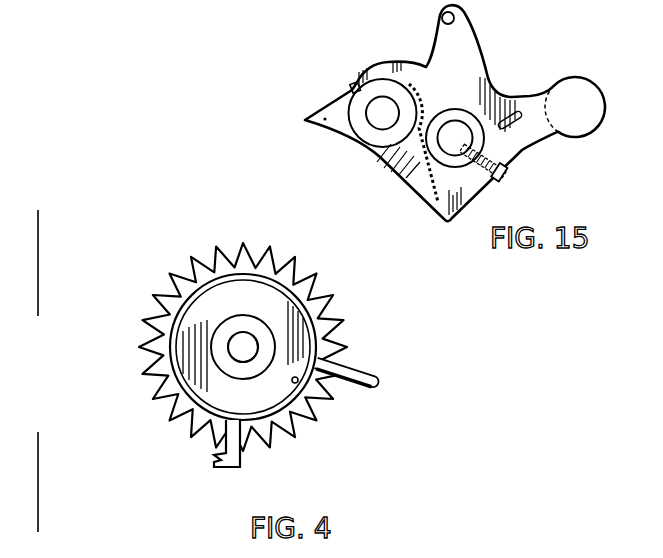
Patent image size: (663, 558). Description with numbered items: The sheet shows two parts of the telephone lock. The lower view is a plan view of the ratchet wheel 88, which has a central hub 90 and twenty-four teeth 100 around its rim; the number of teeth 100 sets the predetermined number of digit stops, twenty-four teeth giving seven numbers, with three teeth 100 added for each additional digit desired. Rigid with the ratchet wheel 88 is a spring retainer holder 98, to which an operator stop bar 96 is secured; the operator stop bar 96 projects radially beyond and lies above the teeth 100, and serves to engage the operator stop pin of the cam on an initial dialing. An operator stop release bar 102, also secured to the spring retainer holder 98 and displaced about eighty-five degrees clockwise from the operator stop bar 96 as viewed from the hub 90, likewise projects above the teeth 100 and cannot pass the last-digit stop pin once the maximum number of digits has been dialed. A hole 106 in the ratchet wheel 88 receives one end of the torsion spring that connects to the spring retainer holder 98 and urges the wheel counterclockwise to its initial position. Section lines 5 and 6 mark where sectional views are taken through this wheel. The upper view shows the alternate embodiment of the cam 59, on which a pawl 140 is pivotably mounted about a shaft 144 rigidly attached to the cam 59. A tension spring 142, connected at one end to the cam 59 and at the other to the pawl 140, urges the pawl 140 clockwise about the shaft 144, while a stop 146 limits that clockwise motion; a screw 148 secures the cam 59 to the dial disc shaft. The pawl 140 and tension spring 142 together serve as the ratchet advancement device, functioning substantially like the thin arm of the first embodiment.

In FIG. 15, the cam 59 is at (463, 72).
In FIG. 15, the pawl 140 is at (325, 119).
In FIG. 15, the tension spring 142 is at (424, 162).
In FIG. 15, the shaft 144 is at (383, 110).
In FIG. 15, the stop 146 is at (352, 86).
In FIG. 15, the screw 148 is at (510, 184).
In FIG. 4, the ratchet wheel 88 is at (309, 322).
In FIG. 4, the hub 90 is at (252, 328).
In FIG. 4, the spring retainer holder 98 is at (325, 316).
In FIG. 4, the teeth 100 is at (201, 248).
In FIG. 4, the operator stop bar 96 is at (368, 370).
In FIG. 4, the operator stop release bar 102 is at (231, 467).
In FIG. 4, the hole 106 is at (295, 384).
In FIG. 4, the section line 5- 5 is at (38, 216).
In FIG. 4, the section line 6- 6 is at (115, 345).